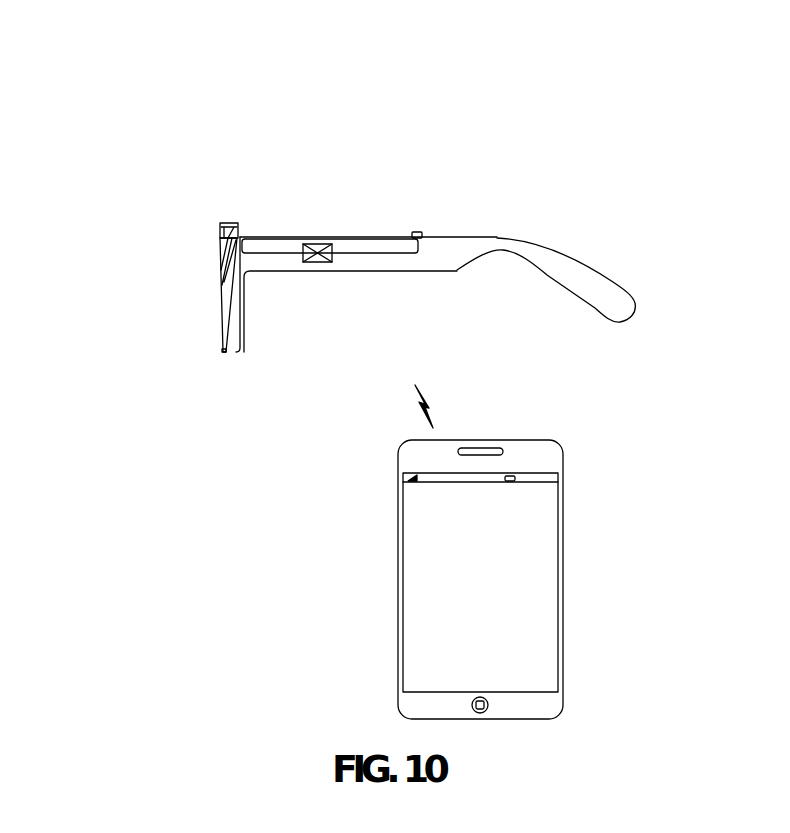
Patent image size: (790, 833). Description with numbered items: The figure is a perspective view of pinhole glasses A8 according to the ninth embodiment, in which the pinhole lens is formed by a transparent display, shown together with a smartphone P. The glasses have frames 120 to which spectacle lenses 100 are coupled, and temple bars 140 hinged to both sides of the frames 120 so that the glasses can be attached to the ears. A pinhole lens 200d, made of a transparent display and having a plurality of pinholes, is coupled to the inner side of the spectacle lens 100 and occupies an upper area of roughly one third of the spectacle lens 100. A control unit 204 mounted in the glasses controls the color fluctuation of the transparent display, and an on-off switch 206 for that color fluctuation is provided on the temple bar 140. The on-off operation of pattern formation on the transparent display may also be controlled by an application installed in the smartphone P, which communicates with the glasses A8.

The glasses-type wearable device assembly A8 is at (335, 158).
The glasses frame 100 is at (218, 312).
The lens rim / front frame 120 is at (223, 355).
The temple 140 is at (428, 272).
The hinge module / attachment 200d is at (211, 253).
The communication module 204 is at (323, 262).
The button / switch 206 is at (423, 232).
The portable terminal (smartphone) P is at (563, 572).